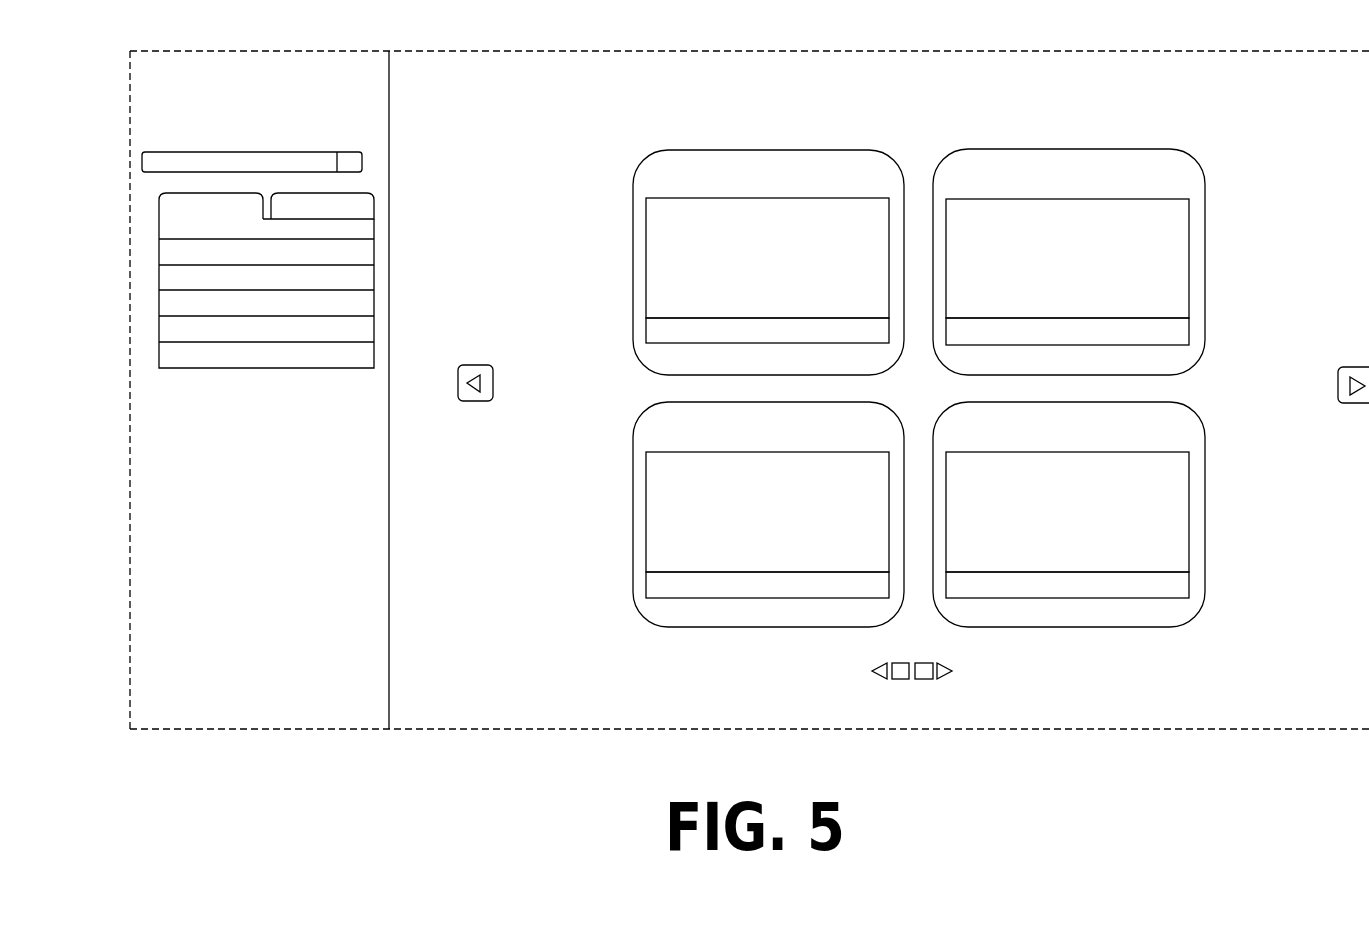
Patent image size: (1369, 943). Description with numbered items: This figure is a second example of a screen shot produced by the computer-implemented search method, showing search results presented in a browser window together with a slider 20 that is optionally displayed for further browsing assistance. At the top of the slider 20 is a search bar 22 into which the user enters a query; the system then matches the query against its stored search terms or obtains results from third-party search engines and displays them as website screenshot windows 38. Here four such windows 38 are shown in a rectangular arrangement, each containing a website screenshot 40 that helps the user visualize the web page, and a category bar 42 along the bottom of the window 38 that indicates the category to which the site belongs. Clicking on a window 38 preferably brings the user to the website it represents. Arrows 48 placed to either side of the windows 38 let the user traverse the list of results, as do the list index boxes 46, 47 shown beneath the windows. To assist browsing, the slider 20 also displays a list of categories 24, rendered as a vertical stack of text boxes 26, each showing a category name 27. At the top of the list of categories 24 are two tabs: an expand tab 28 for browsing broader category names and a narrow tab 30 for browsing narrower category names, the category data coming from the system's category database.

The slider 20 is at (277, 105).
The search bar 22 is at (227, 152).
The list of categories 24 is at (159, 228).
The text boxes 26 is at (159, 352).
The category name 27 is at (330, 355).
The expand tab 28 is at (160, 193).
The narrow tab 30 is at (373, 193).
The website screenshot window 38 is at (633, 205).
The website screenshot 40 is at (646, 238).
The category bar 42 is at (647, 325).
The list index box 46 is at (925, 661).
The list index box 47 is at (880, 675).
The arrows 48 is at (472, 363).